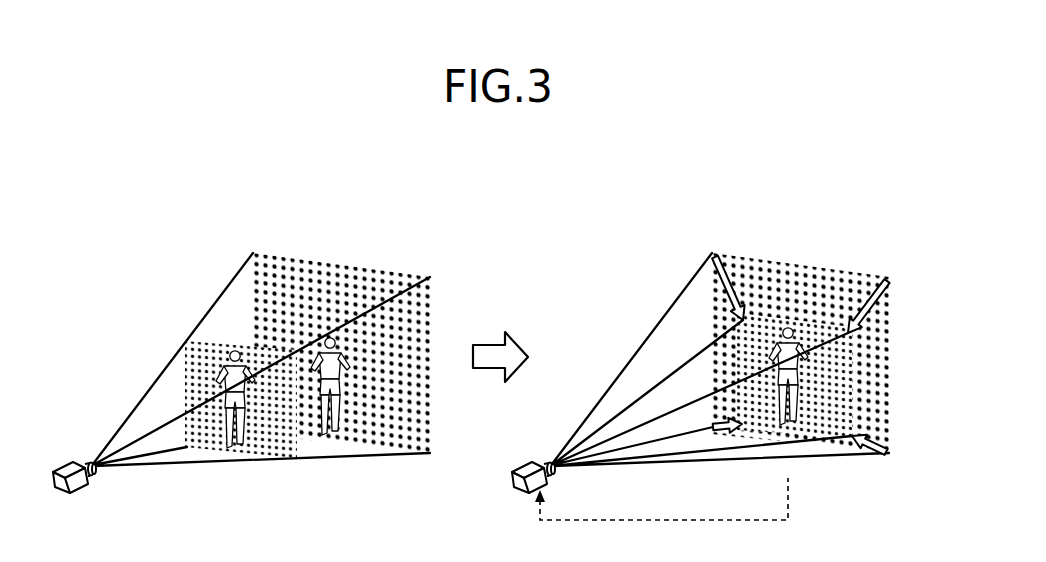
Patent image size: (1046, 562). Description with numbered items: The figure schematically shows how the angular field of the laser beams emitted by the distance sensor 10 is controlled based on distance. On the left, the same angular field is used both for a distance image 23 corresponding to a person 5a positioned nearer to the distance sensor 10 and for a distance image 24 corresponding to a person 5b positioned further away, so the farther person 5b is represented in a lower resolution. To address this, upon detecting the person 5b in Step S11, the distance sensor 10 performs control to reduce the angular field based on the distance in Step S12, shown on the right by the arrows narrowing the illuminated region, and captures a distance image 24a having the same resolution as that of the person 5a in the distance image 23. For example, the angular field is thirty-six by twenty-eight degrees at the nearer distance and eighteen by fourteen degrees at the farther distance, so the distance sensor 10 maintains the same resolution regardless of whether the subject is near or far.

The distance sensor 10 is at (78, 495).
The person 5a is at (211, 351).
The person 5b is at (311, 338).
The distance image 23 is at (251, 455).
The distance image 24 is at (366, 456).
The distance image 24a is at (818, 328).
The step of reducing the angular field S12 is at (740, 289).
The step of detecting the person S11 is at (655, 521).